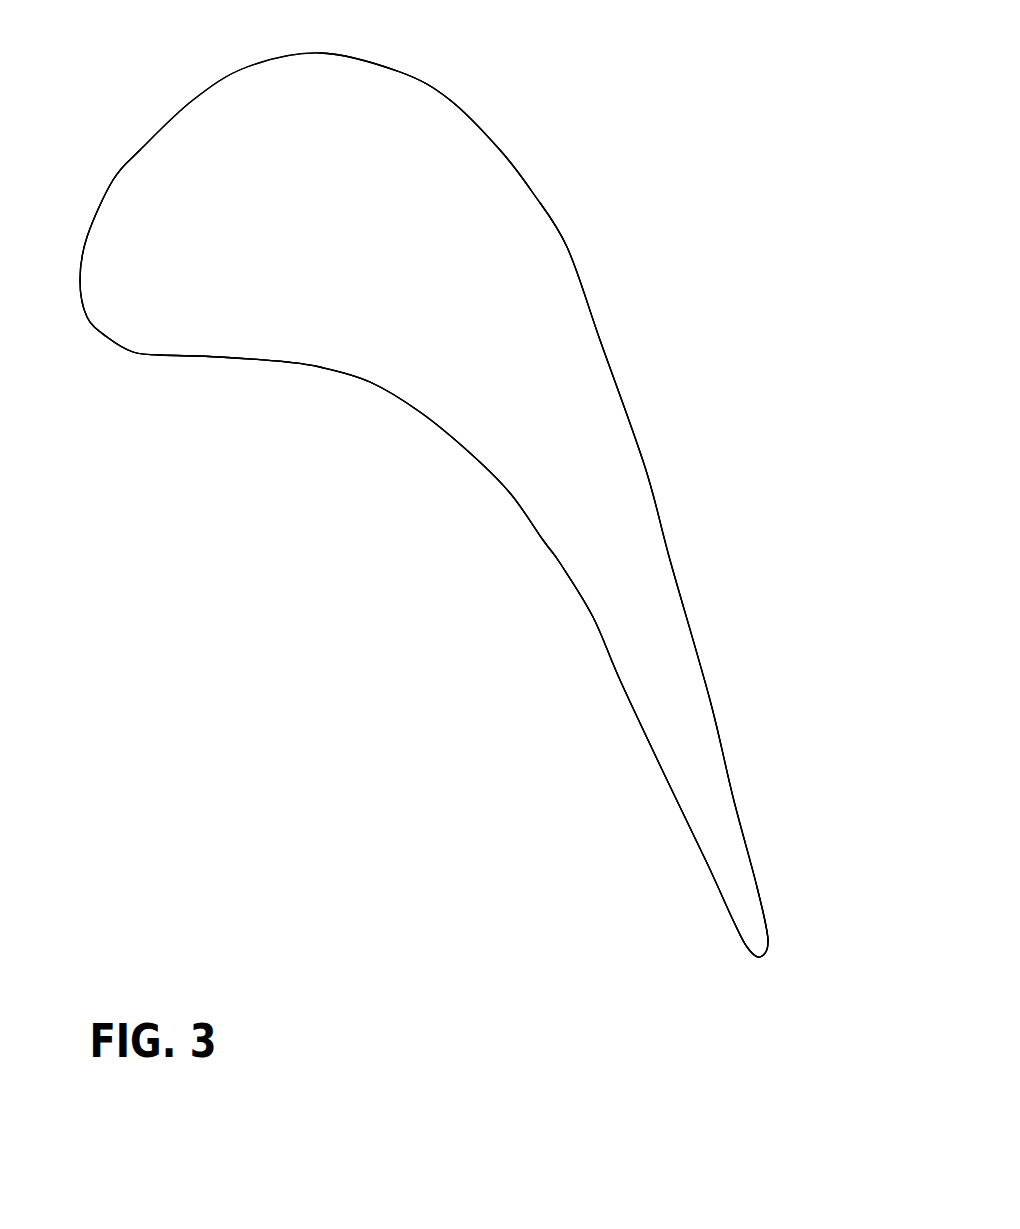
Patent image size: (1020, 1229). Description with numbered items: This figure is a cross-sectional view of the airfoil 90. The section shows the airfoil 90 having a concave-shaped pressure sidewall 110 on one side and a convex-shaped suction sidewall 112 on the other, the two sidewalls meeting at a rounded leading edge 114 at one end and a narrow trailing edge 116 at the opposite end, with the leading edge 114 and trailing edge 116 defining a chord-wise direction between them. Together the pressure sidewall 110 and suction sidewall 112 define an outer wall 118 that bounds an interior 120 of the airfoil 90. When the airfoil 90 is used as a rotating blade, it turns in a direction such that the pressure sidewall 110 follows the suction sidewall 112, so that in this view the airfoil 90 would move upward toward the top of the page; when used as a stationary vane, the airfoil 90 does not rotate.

The airfoil 90 is at (141, 111).
The pressure sidewall 110 is at (422, 412).
The suction sidewall 112 is at (532, 193).
The leading edge 114 is at (88, 317).
The trailing edge 116 is at (760, 958).
The outer wall 118 is at (645, 467).
The interior 120 is at (353, 224).